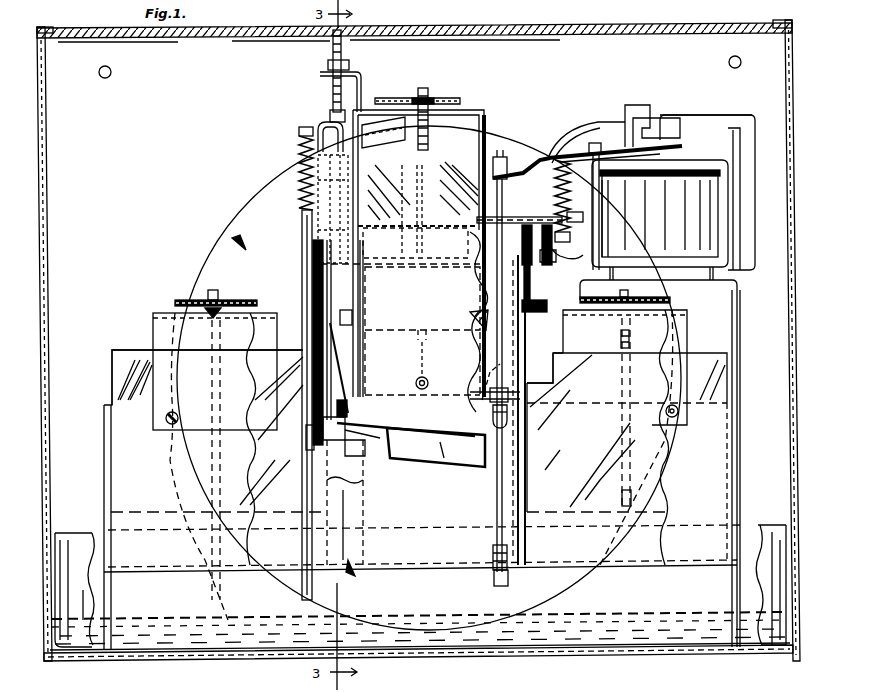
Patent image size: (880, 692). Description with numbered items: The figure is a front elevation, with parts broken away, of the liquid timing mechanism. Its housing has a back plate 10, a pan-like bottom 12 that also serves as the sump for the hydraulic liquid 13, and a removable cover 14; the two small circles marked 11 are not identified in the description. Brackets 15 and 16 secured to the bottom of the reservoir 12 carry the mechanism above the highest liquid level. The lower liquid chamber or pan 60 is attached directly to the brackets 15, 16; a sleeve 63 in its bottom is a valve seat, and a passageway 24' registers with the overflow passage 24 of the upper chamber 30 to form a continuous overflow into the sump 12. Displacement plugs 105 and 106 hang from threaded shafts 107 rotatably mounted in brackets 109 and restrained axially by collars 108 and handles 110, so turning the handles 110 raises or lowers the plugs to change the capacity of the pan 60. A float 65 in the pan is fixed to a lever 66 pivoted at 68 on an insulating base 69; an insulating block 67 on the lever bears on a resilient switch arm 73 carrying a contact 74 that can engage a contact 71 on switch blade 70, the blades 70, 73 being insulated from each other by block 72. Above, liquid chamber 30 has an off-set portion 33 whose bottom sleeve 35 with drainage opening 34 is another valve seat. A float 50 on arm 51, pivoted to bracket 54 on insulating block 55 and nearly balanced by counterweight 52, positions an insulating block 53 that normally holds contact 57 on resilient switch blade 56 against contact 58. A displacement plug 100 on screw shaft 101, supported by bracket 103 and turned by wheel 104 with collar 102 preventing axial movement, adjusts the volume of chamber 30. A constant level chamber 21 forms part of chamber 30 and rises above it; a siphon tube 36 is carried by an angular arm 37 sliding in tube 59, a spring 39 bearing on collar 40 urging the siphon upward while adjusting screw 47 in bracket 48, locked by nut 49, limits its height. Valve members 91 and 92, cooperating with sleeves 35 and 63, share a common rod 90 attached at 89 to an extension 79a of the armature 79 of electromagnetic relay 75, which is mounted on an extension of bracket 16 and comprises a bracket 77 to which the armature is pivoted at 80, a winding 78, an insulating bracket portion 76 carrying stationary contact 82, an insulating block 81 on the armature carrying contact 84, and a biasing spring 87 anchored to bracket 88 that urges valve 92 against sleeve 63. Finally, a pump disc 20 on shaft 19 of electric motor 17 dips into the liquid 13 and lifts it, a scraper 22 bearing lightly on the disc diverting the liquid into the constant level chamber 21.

The back plate 10 is at (309, 88).
The mounting holes 11 is at (104, 78).
The pan-like bottom 12 is at (70, 540).
The liquid 13 is at (230, 618).
The removable cover 14 is at (78, 222).
The bracket 15 is at (111, 595).
The bracket 16 is at (738, 295).
The electric motor 17 is at (482, 366).
The shaft 19 is at (423, 376).
The disc 20 is at (248, 210).
The constant level liquid chamber 21 is at (318, 178).
The scoop or scraper 22 is at (384, 142).
The overflow passage 24 is at (375, 318).
The passageway 24' is at (366, 502).
The liquid chamber 30 is at (456, 297).
The off-set portion 33 is at (526, 347).
The opening 34 is at (498, 390).
The insert or sleeve 35 is at (528, 405).
The siphon tube 36 is at (330, 112).
The angular arm 37 is at (316, 124).
The spring 39 is at (299, 153).
The collar 40 is at (299, 131).
The adjusting screw 47 is at (333, 84).
The bracket 48 is at (362, 80).
The lock nut 49 is at (328, 63).
The float 50 is at (389, 192).
The arm 51 is at (478, 210).
The counterweight 52 is at (610, 222).
The insulating block 53 is at (516, 217).
The bracket 54 is at (563, 243).
The insulating block 55 is at (548, 262).
The resilient switch blade 56 is at (548, 306).
The switch contact 57 is at (527, 225).
The contact 58 is at (558, 198).
The tube 59 is at (302, 236).
The liquid chamber or pan 60 is at (100, 449).
The insert tube or sleeve 63 is at (510, 577).
The float 65 is at (442, 456).
The lever 66 is at (398, 426).
The insulating block 67 is at (352, 442).
The pivot 68 is at (325, 432).
The insulating base member 69 is at (306, 440).
The switch blade 70 is at (322, 290).
The contact 71 is at (328, 345).
The block 72 is at (350, 292).
The resilient switch arm 73 is at (353, 318).
The contact 74 is at (348, 374).
The relay 75 is at (612, 97).
The insulating bracket portion 76 is at (750, 138).
The bracket 77 is at (740, 212).
The winding 78 is at (660, 213).
The relay armature 79 is at (683, 148).
The extension 79a is at (532, 165).
The pivot 80 is at (593, 145).
The insulating block 81 is at (590, 126).
The stationary contact 82 is at (662, 124).
The contact 84 is at (633, 105).
The biasing spring 87 is at (556, 214).
The bracket 88 is at (596, 258).
The attachment 89 is at (500, 157).
The valve rod 90 is at (496, 492).
The valve member 91 is at (492, 416).
The valve member 92 is at (493, 553).
The displacement plug 100 is at (458, 175).
The screw shaft 101 is at (425, 92).
The collar 102 is at (432, 100).
The bracket 103 is at (486, 112).
The wheel-like handle 104 is at (455, 100).
The displacement plug means 105 is at (120, 365).
The displacement plug means 106 is at (708, 358).
The threaded shaft 107 is at (217, 291).
The collar 108 is at (424, 459).
The bracket 109 is at (160, 330).
The adjusting wheel or handle 110 is at (195, 300).